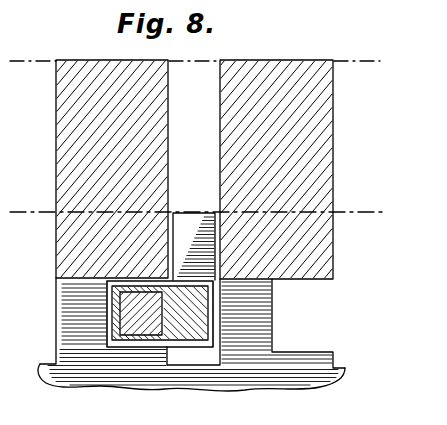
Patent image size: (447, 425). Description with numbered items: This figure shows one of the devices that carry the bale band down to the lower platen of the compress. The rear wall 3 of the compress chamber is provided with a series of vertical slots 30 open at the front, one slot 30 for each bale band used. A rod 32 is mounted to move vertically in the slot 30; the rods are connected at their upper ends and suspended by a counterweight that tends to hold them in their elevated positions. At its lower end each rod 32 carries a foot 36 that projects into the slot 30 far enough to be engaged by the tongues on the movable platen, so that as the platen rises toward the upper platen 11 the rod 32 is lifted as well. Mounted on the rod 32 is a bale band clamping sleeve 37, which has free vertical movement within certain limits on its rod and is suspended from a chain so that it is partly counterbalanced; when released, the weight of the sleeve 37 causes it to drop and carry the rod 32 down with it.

The upper platen 11 is at (336, 163).
The foot 36 is at (197, 228).
The bale band clamping sleeve 37 is at (210, 306).
The rod 32 is at (121, 325).
The rear wall 3 is at (90, 370).
The vertical slot 30 is at (207, 359).